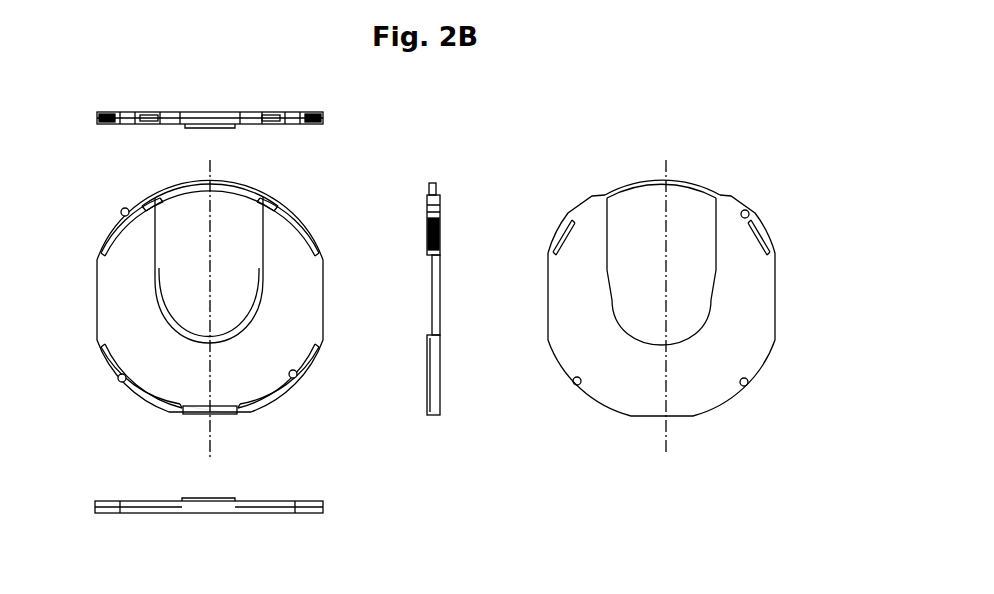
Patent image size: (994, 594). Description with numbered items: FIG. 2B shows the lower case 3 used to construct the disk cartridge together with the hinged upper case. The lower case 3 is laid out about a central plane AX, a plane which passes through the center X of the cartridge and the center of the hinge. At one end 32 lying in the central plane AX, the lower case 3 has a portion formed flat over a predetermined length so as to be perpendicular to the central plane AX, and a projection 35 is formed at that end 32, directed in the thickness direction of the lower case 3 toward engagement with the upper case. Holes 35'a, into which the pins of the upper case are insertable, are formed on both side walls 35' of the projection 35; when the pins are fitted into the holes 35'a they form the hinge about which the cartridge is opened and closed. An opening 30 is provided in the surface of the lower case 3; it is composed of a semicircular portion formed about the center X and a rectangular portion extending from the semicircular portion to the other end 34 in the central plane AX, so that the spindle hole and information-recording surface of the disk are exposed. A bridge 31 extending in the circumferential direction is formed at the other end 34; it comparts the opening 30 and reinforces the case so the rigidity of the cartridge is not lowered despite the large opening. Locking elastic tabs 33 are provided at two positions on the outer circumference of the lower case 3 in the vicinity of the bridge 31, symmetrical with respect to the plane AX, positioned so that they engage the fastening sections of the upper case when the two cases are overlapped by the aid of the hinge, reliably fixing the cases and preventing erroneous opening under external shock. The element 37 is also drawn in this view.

The lower case 3 is at (402, 140).
The opening 30 is at (172, 210).
The bridge 31 is at (265, 190).
The one end 32 is at (240, 438).
The locking elastic tab 33 is at (113, 232).
The other end 34 is at (243, 182).
The projection 35 is at (198, 452).
The side wall 35' is at (209, 529).
The hole 35'a is at (407, 445).
The inner wall 37 is at (247, 328).
The center X is at (210, 312).
The central plane AX is at (438, 320).